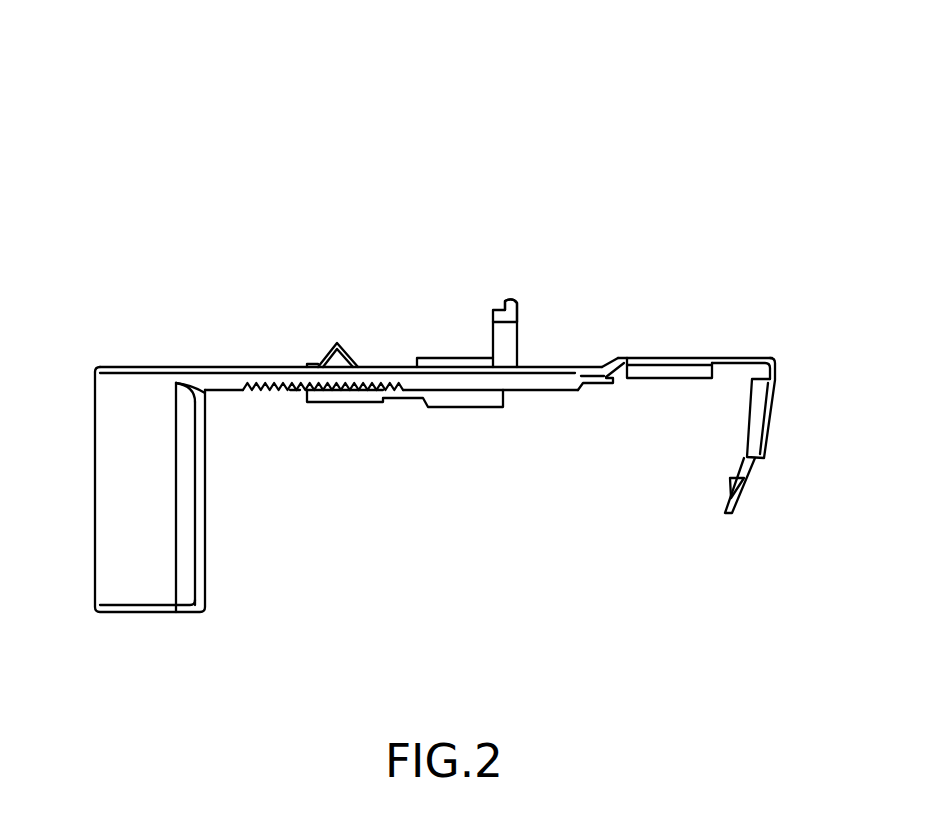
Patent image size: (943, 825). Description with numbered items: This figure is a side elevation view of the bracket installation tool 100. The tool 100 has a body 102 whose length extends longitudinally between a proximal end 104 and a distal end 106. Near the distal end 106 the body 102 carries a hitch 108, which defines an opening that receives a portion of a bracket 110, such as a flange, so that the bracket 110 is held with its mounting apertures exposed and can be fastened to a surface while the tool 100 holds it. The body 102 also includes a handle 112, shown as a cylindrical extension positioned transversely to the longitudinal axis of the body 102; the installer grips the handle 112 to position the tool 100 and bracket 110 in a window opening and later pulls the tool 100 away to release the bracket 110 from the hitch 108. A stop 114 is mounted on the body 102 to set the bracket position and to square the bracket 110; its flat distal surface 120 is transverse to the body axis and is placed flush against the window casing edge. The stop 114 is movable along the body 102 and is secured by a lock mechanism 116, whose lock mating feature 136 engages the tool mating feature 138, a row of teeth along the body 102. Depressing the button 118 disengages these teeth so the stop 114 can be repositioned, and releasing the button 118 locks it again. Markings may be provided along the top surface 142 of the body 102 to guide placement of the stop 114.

The tool 100 is at (663, 110).
The body 102 is at (250, 367).
The proximal end 104 is at (167, 303).
The distal end 106 is at (610, 326).
The hitch 108 is at (584, 384).
The bracket 110 is at (757, 358).
The handle 112 is at (96, 478).
The stop 114 is at (496, 307).
The lock mechanism 116 is at (263, 391).
The button 118 is at (336, 341).
The distal surface 120 is at (514, 333).
The lock mating feature 136 is at (388, 401).
The tool mating feature 138 is at (299, 391).
The top surface 142 is at (130, 367).